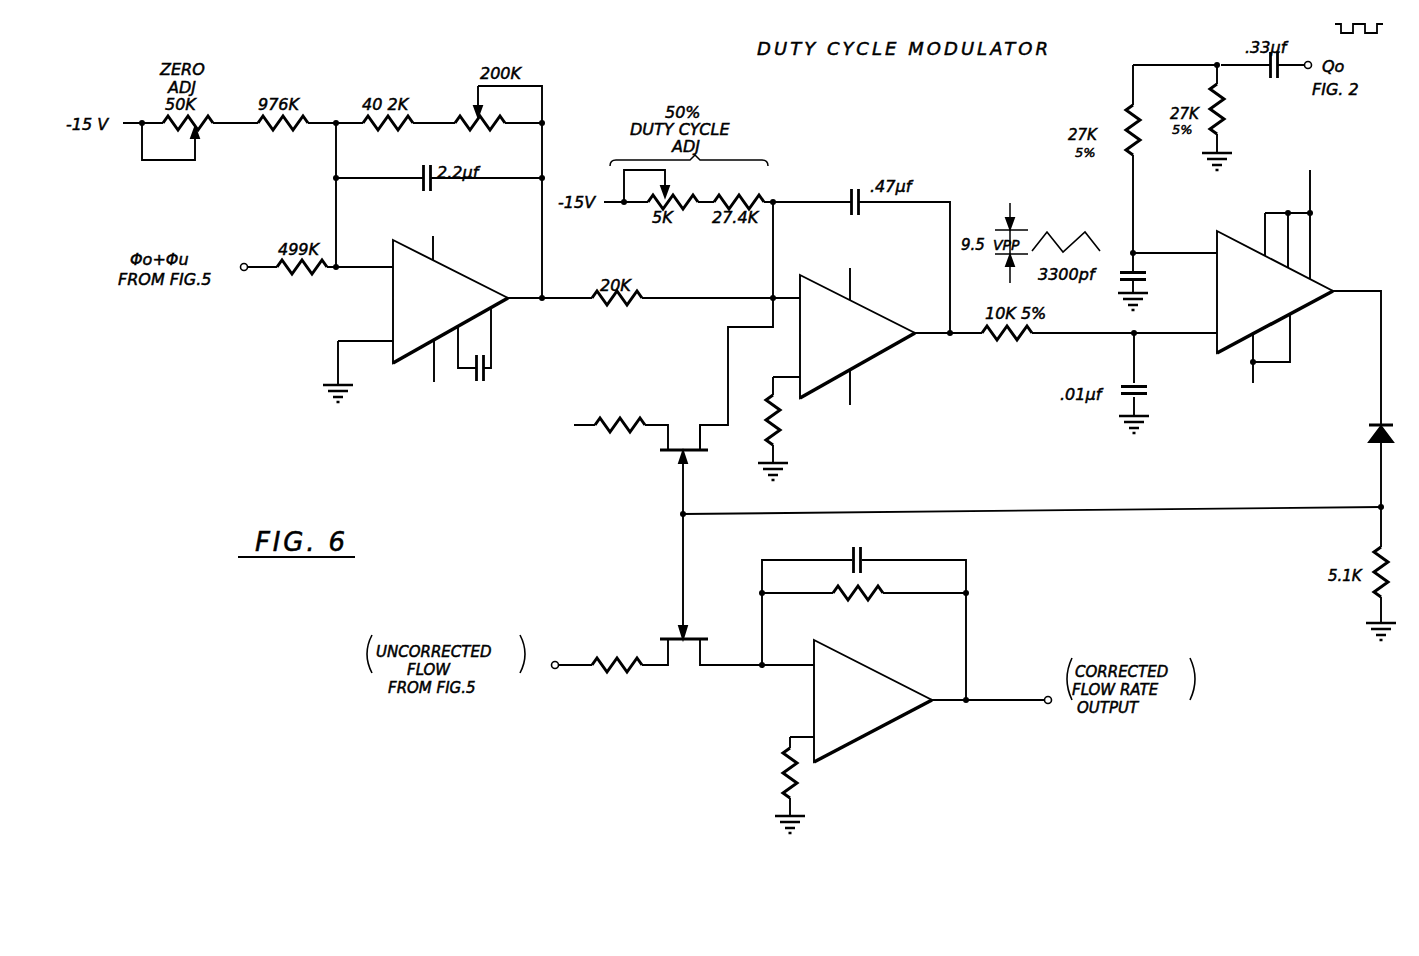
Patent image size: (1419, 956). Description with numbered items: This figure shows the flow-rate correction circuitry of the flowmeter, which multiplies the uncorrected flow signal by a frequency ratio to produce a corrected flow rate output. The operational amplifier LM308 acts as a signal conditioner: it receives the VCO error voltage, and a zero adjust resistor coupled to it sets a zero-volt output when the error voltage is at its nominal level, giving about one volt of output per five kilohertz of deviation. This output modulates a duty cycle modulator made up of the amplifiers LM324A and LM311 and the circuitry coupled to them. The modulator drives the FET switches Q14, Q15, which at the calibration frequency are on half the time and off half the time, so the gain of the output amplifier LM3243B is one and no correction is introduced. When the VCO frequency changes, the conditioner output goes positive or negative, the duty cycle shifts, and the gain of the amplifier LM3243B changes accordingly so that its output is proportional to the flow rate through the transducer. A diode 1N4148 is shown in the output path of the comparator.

The FET switch Q14 is at (624, 522).
The FET switch Q15 is at (683, 674).
The operational amplifier LM308 is at (457, 314).
The amplifier LM324A is at (870, 366).
The amplifier LM3243B is at (893, 685).
The amplifier LM311 is at (1284, 288).
The diode 1N4148 is at (1337, 486).